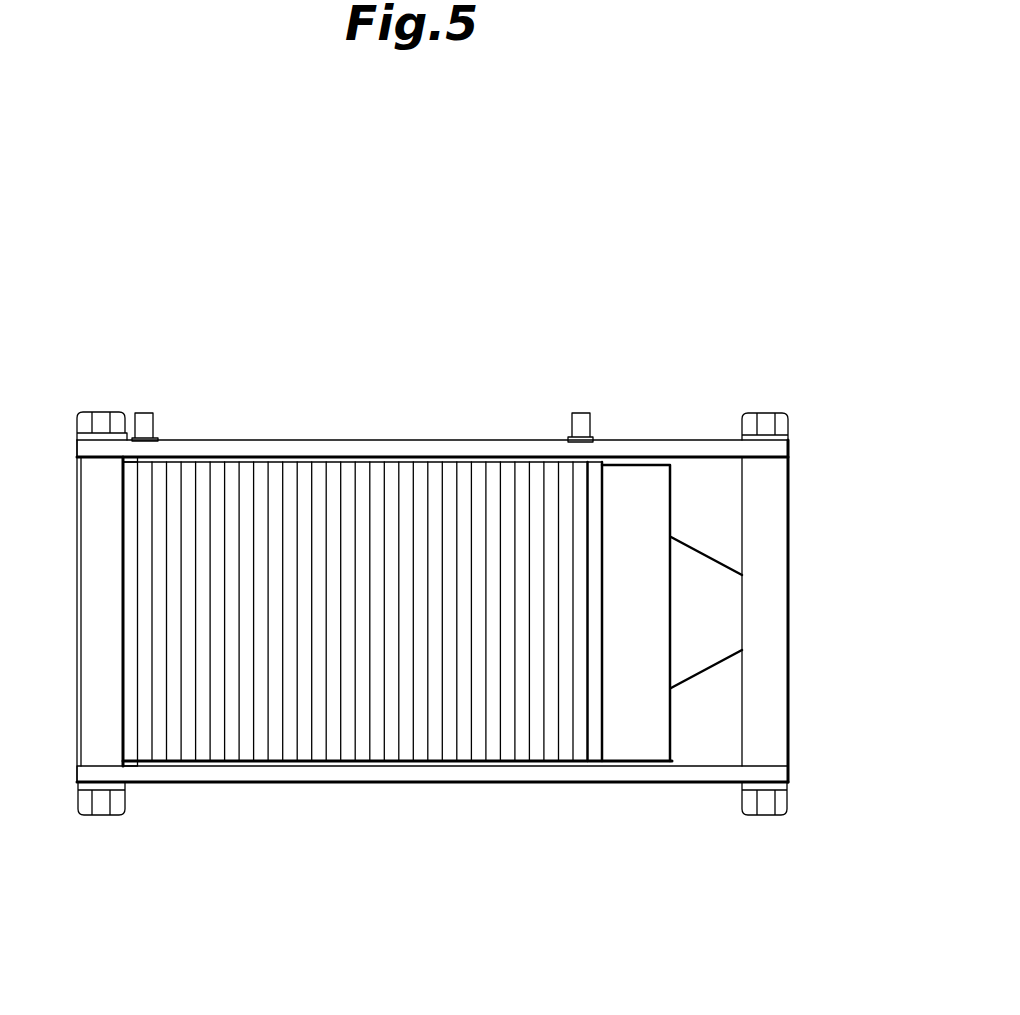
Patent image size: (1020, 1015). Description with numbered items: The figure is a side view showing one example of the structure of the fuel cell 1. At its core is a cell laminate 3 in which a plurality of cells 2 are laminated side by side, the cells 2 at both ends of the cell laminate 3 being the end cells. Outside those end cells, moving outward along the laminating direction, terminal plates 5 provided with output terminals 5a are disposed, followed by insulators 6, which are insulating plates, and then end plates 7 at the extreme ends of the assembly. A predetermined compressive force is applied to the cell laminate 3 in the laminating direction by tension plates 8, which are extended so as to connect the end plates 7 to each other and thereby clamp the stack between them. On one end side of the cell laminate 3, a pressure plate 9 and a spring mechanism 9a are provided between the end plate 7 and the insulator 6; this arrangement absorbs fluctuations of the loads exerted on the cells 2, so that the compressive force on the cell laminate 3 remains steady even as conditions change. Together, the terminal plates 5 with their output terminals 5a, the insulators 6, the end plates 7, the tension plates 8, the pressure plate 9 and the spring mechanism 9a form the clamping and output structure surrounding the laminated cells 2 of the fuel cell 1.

The fuel cell 1 is at (456, 493).
The cell 2 is at (172, 487).
The cell laminate 3 is at (397, 568).
The terminal plate 5 is at (147, 747).
The output terminal 5a is at (147, 413).
The insulator 6 is at (130, 747).
The end plate 7 is at (92, 743).
The tension plate 8 is at (680, 440).
The pressure plate 9 is at (739, 612).
The spring mechanism 9a is at (705, 613).